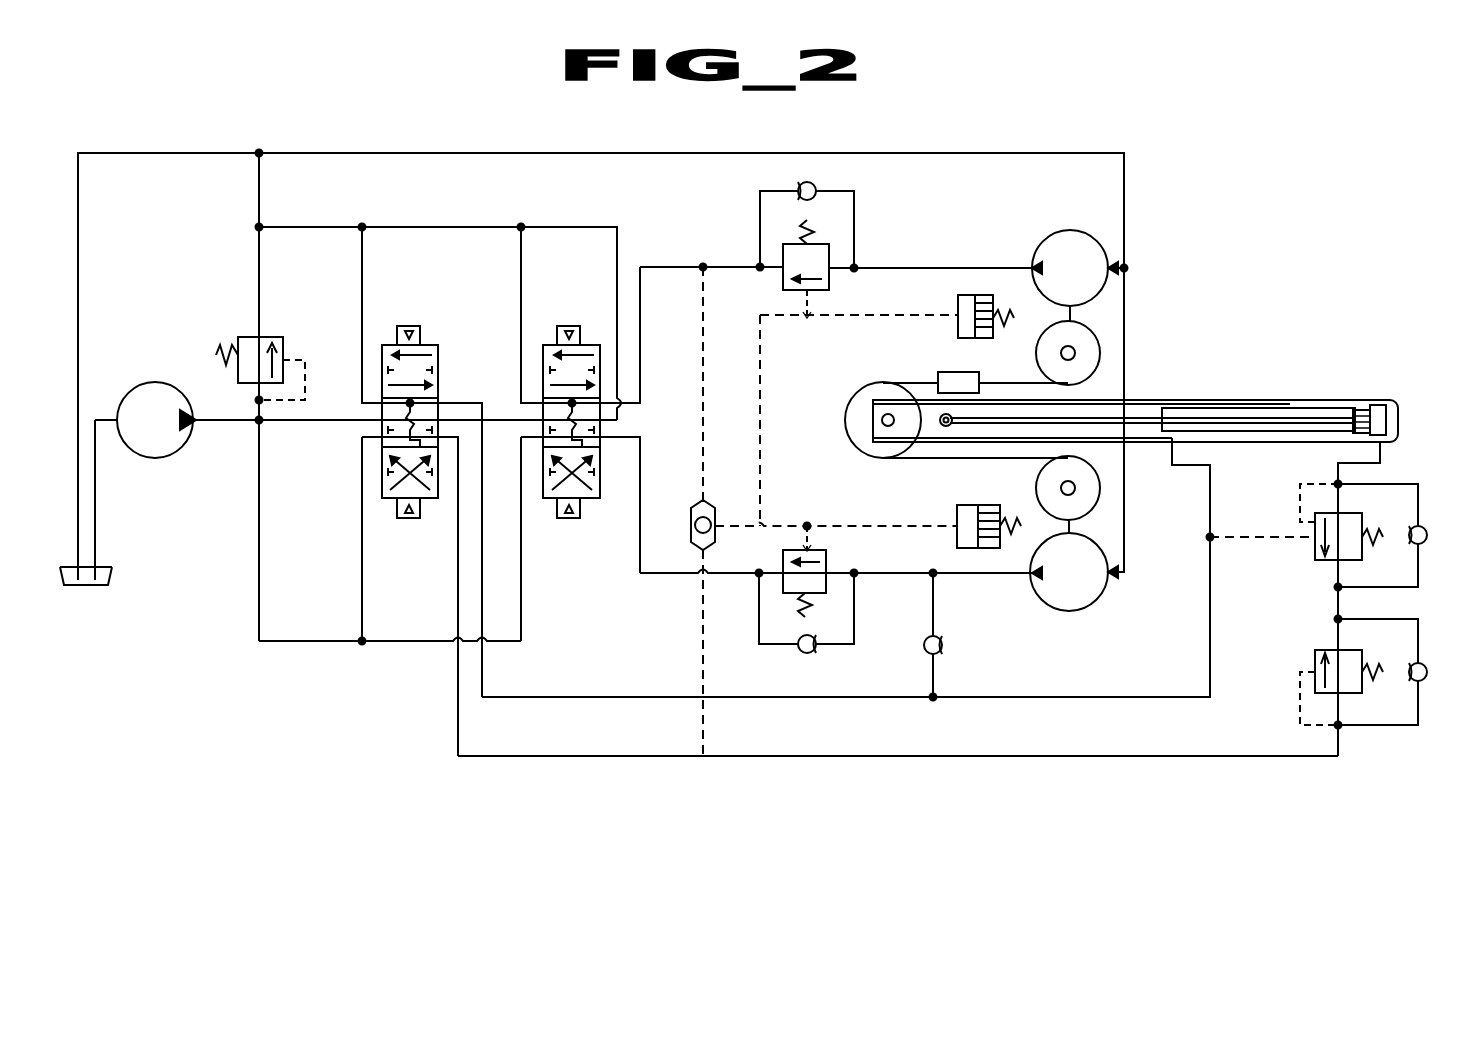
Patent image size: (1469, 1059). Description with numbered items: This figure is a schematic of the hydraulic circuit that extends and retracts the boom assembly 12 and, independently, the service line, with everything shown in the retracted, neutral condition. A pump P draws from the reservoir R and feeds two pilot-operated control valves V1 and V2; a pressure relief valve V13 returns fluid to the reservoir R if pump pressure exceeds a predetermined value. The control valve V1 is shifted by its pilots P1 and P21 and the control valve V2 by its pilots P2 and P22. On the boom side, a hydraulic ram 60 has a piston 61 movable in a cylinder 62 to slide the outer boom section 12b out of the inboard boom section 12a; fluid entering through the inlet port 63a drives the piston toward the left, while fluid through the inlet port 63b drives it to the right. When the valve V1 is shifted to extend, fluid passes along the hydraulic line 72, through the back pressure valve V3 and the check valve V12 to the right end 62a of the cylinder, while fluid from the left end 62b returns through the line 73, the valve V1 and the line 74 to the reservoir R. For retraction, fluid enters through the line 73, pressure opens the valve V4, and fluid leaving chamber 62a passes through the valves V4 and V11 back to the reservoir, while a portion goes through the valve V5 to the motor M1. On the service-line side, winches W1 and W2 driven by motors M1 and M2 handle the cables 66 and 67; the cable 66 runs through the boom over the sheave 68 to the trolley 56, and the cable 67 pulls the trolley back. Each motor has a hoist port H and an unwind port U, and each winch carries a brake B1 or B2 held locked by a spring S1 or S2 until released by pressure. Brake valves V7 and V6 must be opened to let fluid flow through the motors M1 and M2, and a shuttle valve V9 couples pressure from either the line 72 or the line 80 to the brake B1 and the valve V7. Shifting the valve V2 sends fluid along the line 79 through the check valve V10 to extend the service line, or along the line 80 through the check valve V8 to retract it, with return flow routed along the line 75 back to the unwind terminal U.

The line 74 is at (135, 152).
The line 75 is at (590, 153).
The line 80 is at (660, 266).
The line 79 is at (666, 576).
The line 73 is at (1031, 697).
The hydraulic line 72 is at (1035, 757).
The boom assembly 12 is at (1146, 398).
The inboard boom section 12a is at (1233, 400).
The boom section 12b is at (873, 433).
The trolley 56 is at (938, 383).
The hydraulic ram 60 is at (1253, 438).
The piston 61 is at (1362, 409).
The cylinder 62 is at (1297, 408).
The right end of the hydraulic cylinder 62a is at (1380, 405).
The left end of the cylinder 62b is at (1183, 408).
The inlet port 63a is at (1380, 455).
The inlet port 63b is at (1172, 456).
The cable 66 is at (925, 461).
The cable 67 is at (962, 372).
The sheave 68 is at (848, 405).
The pump P is at (165, 435).
The reservoir R is at (112, 577).
The control valve V1 is at (382, 431).
The control valve V2 is at (604, 431).
The back pressure valve V3 is at (1312, 663).
The valve V4 is at (1313, 552).
The valve V5 is at (943, 650).
The brake valve V6 is at (783, 277).
The brake valve V7 is at (826, 561).
The check valve V8 is at (816, 192).
The shuttle valve V9 is at (696, 508).
The check valve V10 is at (799, 652).
The valve V11 is at (1412, 665).
The check valve V12 is at (1412, 528).
The pressure relief valve V13 is at (245, 337).
The pilot P1 is at (408, 326).
The pilot P2 is at (569, 326).
The pilot P21 is at (400, 518).
The pilot P22 is at (568, 518).
The drive motor M1 is at (1088, 587).
The drive motor M2 is at (1090, 283).
The winch W1 is at (1036, 489).
The winch W2 is at (1036, 354).
The winch brake B1 is at (957, 513).
The winch brake B2 is at (958, 305).
The spring S1 is at (992, 548).
The spring S2 is at (1004, 318).
The hoist port H is at (1031, 262).
The unwind port U is at (1109, 278).